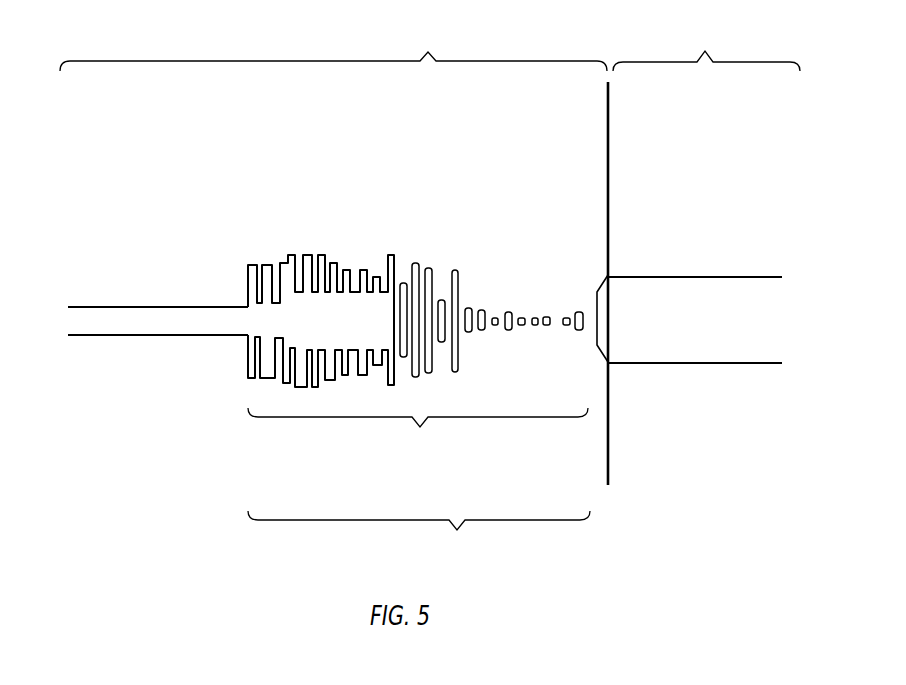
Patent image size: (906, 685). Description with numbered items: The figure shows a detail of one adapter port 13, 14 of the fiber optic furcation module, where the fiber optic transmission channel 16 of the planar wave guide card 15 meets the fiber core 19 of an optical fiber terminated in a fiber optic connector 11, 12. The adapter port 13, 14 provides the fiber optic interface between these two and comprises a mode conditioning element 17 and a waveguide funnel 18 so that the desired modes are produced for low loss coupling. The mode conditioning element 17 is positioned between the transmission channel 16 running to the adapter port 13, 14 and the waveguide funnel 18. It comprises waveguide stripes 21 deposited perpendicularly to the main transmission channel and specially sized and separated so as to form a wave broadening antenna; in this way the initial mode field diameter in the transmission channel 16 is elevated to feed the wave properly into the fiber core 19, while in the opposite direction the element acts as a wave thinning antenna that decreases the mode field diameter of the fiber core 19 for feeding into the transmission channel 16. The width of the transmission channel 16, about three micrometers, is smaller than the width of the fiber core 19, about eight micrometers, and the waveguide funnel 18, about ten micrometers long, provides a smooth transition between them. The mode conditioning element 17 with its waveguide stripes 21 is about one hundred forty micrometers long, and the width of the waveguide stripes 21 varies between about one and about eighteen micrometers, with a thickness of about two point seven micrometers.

The fiber optic connector 11 is at (704, 255).
The fiber optic connector 12 is at (704, 255).
The adapter port 13 is at (419, 535).
The adapter port 14 is at (419, 535).
The planar wave guide card 15 is at (333, 48).
The fiber optic transmission channel 16 is at (132, 321).
The mode conditioning element 17 is at (250, 135).
The waveguide funnel 18 is at (603, 334).
The fiber core 19 is at (770, 279).
The waveguide stripes 21 is at (573, 306).